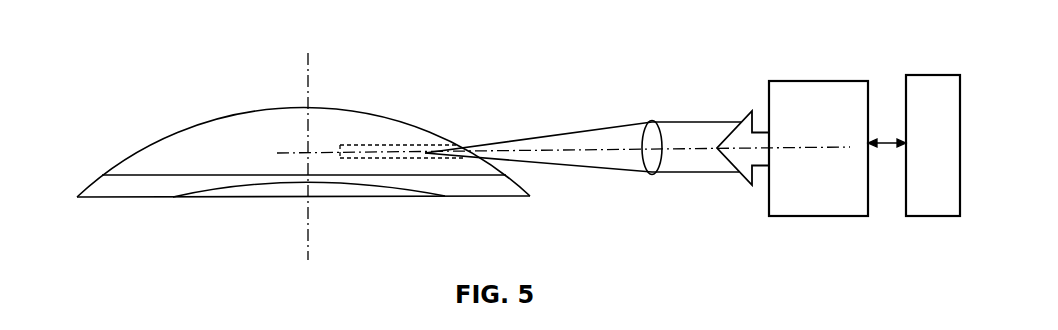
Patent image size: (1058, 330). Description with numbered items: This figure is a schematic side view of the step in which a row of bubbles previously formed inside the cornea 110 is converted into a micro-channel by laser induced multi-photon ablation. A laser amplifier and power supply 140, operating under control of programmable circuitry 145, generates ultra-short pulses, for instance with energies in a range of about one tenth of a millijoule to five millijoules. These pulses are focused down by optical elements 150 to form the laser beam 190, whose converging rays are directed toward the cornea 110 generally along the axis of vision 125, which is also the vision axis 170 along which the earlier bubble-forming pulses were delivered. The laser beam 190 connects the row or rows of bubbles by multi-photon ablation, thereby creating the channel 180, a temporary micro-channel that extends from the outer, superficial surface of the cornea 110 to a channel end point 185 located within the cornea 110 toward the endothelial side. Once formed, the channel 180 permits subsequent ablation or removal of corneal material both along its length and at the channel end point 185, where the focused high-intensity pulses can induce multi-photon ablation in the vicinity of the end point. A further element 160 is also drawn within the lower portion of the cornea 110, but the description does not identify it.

The cornea 110 is at (168, 133).
The axis of vision 125 is at (307, 99).
The embedded lens element 160 is at (143, 197).
The channel end point 185 is at (338, 150).
The channel 180 is at (413, 147).
The vision axis 170 is at (578, 148).
The laser beam 190 is at (578, 167).
The optical elements 150 is at (648, 122).
The laser amplifier and power supply 140 is at (807, 217).
The programmable circuitry 145 is at (935, 77).